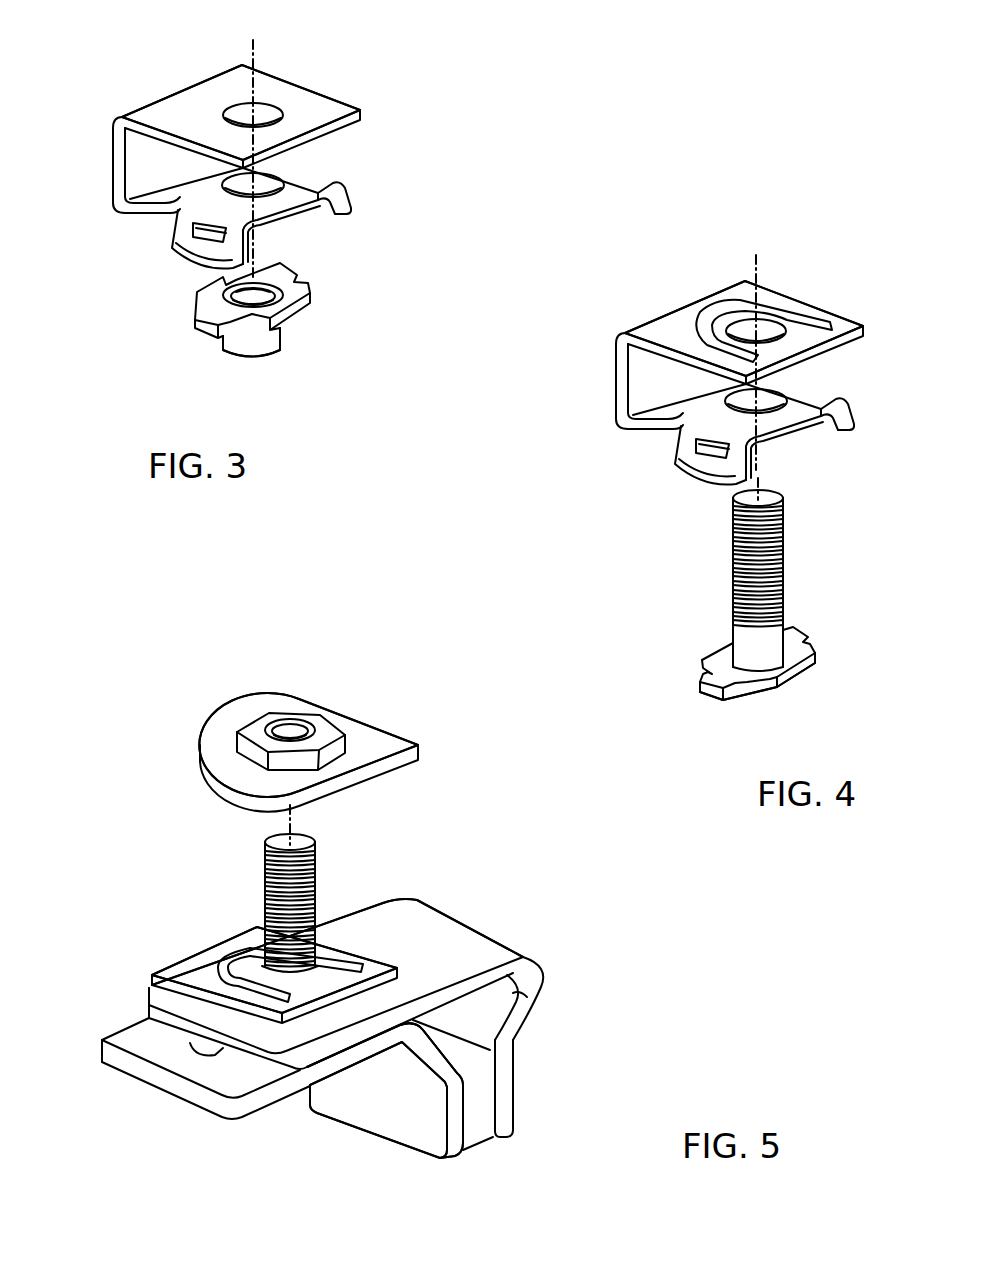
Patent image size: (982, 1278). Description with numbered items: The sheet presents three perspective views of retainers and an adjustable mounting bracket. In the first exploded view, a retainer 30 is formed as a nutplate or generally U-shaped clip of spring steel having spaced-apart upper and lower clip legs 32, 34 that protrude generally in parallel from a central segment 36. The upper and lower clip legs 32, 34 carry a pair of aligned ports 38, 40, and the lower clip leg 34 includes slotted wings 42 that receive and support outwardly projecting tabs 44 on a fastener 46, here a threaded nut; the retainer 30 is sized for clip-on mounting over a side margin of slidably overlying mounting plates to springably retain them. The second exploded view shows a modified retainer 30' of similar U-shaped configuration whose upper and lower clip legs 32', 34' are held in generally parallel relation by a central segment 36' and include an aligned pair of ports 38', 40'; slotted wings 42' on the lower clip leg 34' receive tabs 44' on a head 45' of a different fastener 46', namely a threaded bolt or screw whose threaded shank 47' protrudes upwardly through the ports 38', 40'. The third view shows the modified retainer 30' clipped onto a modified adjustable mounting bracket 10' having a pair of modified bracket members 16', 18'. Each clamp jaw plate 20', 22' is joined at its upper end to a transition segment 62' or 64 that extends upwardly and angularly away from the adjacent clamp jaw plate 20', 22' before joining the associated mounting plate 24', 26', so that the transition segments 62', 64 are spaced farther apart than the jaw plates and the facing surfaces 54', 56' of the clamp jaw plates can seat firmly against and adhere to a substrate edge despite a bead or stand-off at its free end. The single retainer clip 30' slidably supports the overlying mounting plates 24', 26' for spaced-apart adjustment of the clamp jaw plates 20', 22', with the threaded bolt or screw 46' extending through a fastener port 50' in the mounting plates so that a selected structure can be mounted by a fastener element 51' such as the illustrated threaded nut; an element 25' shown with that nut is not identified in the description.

In FIG. 3, the retainer 30 is at (315, 178).
In FIG. 3, the upper clip leg 32 is at (290, 116).
In FIG. 3, the lower clip leg 34 is at (265, 216).
In FIG. 3, the central segment 36 is at (108, 162).
In FIG. 3, the port 38 is at (289, 80).
In FIG. 3, the port 40 is at (181, 213).
In FIG. 3, the slotted wings 42 is at (282, 232).
In FIG. 3, the tabs 44 is at (265, 313).
In FIG. 3, the fastener 46 is at (282, 341).
In FIG. 4, the modified retainer 30' is at (796, 444).
In FIG. 5, the modified retainer 30' is at (243, 853).
In FIG. 4, the upper clip leg 32' is at (791, 332).
In FIG. 5, the upper clip leg 32' is at (274, 991).
In FIG. 4, the lower clip leg 34' is at (705, 432).
In FIG. 4, the central segment 36' is at (611, 381).
In FIG. 4, the port 38' is at (789, 295).
In FIG. 4, the port 40' is at (821, 383).
In FIG. 4, the slotted wings 42' is at (779, 456).
In FIG. 4, the tabs 44' is at (742, 663).
In FIG. 4, the head 45' is at (788, 683).
In FIG. 4, the fastener 46' is at (813, 580).
In FIG. 5, the fastener 46' is at (237, 903).
In FIG. 4, the threaded shank 47' is at (710, 566).
In FIG. 5, the threaded shank 47' is at (244, 895).
In FIG. 5, the modified adjustable mounting bracket 10' is at (374, 1020).
In FIG. 5, the modified bracket member 16' is at (336, 1002).
In FIG. 5, the modified bracket member 18' is at (387, 1111).
In FIG. 5, the clamp jaw plate 20' is at (557, 1085).
In FIG. 5, the clamp jaw plate 22' is at (378, 1116).
In FIG. 5, the mounting plate 24' is at (337, 919).
In FIG. 5, the washer 25' is at (334, 752).
In FIG. 5, the mounting plate 26' is at (206, 1083).
In FIG. 5, the fastener port 50' is at (104, 1005).
In FIG. 5, the fastener element 51' is at (321, 719).
In FIG. 5, the facing surface 54' is at (536, 1111).
In FIG. 5, the facing surface 56' is at (508, 1154).
In FIG. 5, the transition segment 62' is at (556, 998).
In FIG. 5, the transition segment 64 is at (405, 1042).